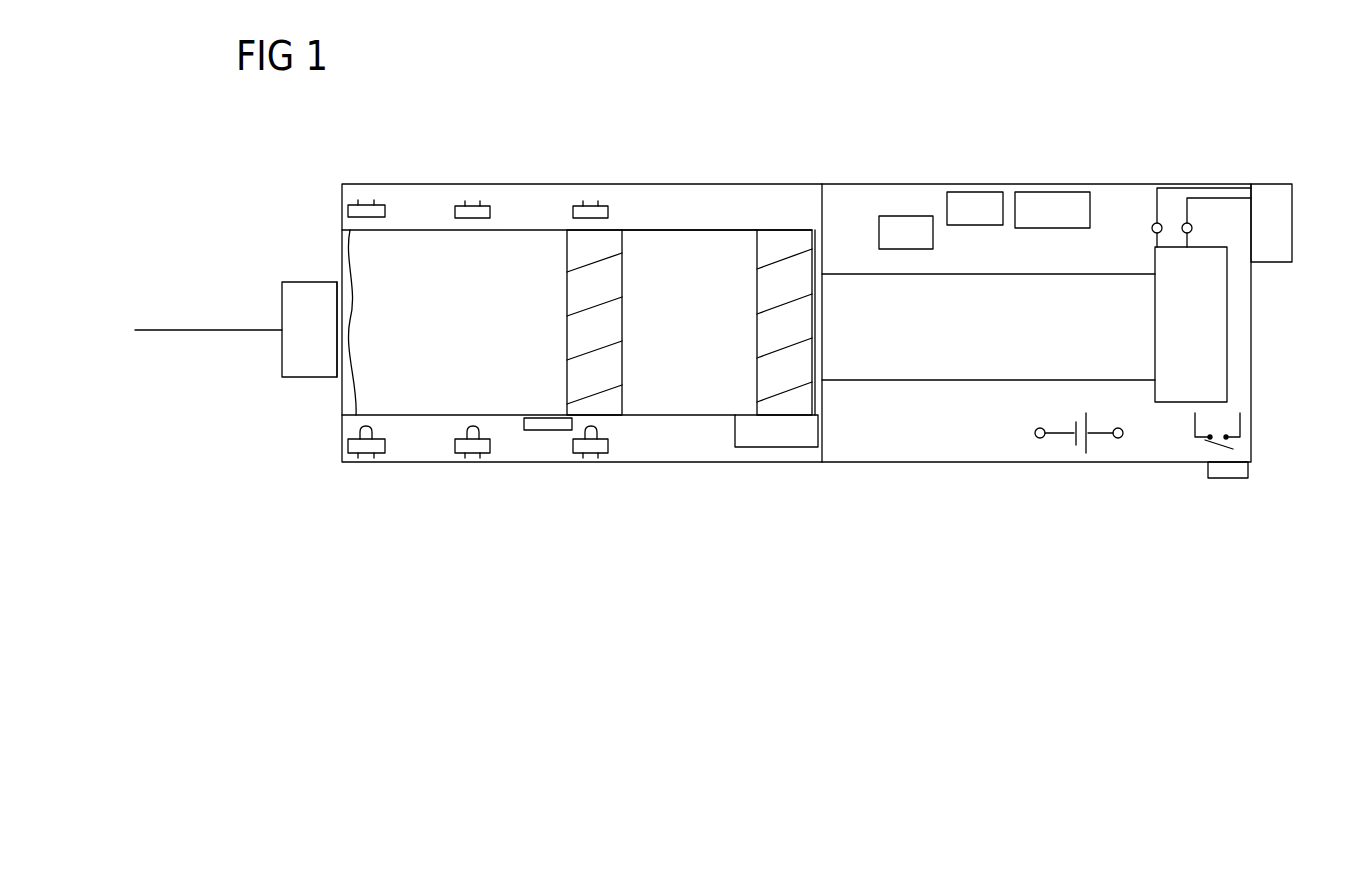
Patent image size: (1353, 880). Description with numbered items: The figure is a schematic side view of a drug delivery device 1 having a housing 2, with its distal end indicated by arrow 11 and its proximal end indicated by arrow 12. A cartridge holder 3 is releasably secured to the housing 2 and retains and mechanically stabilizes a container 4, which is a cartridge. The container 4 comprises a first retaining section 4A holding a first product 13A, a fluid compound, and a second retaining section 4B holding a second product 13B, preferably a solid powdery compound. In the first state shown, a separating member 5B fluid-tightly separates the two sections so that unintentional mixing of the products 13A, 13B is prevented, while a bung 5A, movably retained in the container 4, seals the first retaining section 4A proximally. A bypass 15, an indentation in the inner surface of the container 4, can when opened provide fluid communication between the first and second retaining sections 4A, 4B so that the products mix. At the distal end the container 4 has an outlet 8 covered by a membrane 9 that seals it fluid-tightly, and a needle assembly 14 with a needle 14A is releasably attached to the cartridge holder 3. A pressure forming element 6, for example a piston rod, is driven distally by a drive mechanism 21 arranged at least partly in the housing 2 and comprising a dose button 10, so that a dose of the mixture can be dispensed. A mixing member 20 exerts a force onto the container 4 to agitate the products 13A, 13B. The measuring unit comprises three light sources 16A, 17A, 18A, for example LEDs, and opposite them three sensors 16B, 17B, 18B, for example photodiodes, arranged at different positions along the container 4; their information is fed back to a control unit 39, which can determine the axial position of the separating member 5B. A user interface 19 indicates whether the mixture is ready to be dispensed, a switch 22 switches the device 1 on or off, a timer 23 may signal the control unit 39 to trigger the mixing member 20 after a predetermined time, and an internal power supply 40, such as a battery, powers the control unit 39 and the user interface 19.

The drug delivery device 1 is at (975, 88).
The housing 2 is at (1012, 463).
The cartridge holder 3 is at (800, 463).
The container 4 is at (524, 200).
The first retaining section 4A is at (703, 228).
The second retaining section 4B is at (521, 417).
The bung 5A is at (767, 240).
The separating member 5B is at (612, 240).
The pressure forming element 6 is at (918, 378).
The outlet 8 is at (340, 277).
The membrane 9 is at (335, 298).
The dose button 10 is at (1270, 195).
The arrow indicating distal end 11 is at (149, 187).
The arrow indicating proximal end 12 is at (1281, 334).
The first product 13A is at (697, 388).
The second product 13B is at (345, 390).
The needle assembly 14 is at (265, 241).
The needle 14A is at (178, 332).
The bypass 15 is at (560, 430).
The light source 16A is at (355, 462).
The sensor 16B is at (364, 205).
The light source 17A is at (462, 455).
The sensor 17B is at (470, 206).
The light source 18A is at (608, 454).
The sensor 18B is at (580, 206).
The user interface 19 is at (1052, 205).
The mixing member 20 is at (742, 440).
The drive mechanism 21 is at (1173, 402).
The switch 22 is at (1222, 480).
The timer 23 is at (907, 228).
The control unit 39 is at (972, 198).
The internal power supply 40 is at (1075, 455).